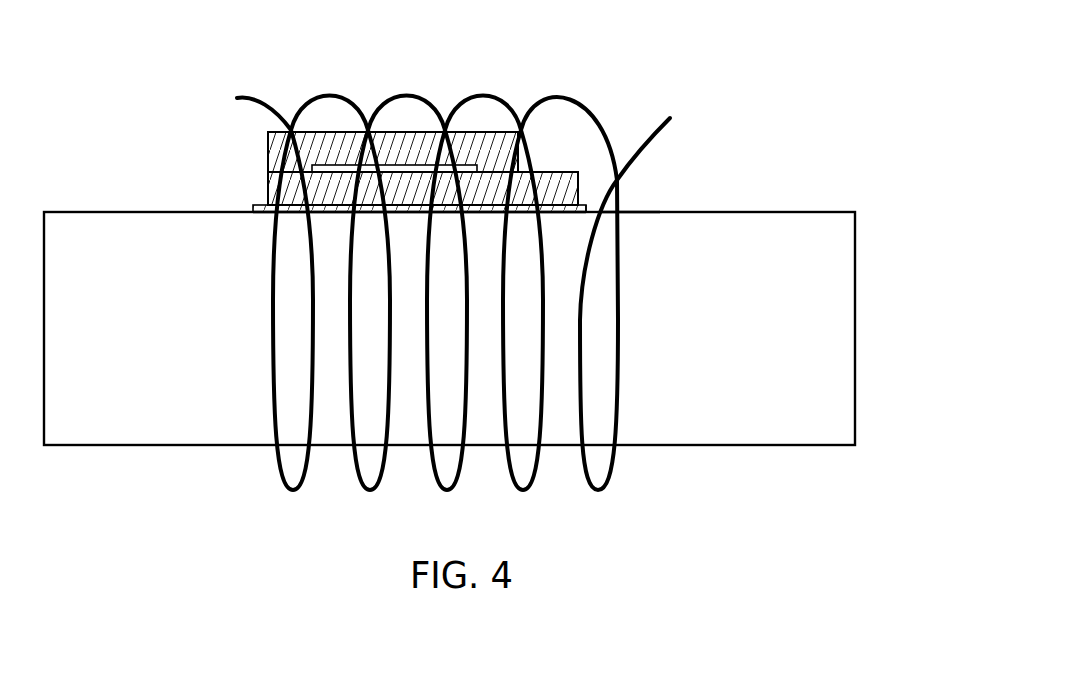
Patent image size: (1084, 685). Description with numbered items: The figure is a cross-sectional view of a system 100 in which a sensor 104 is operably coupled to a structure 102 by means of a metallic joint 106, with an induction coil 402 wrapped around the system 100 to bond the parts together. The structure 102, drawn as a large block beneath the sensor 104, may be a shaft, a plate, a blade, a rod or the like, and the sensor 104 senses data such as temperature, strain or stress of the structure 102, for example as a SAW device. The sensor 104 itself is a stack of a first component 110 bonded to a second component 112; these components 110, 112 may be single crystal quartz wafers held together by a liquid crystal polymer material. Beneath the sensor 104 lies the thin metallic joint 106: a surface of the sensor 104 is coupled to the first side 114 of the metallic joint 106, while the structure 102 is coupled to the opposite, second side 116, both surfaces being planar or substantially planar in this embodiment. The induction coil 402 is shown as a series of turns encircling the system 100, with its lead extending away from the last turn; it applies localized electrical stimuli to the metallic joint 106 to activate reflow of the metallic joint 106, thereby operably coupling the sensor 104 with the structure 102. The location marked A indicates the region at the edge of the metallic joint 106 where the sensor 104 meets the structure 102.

The system 100 is at (438, 111).
The structure 102 is at (857, 324).
The sensor 104 is at (489, 124).
The metallic joint 106 is at (589, 208).
The first component 110 is at (267, 137).
The second component 112 is at (267, 175).
The first side 114 is at (263, 203).
The second side 116 is at (262, 218).
The induction coil 402 is at (652, 130).
The location A is at (627, 209).